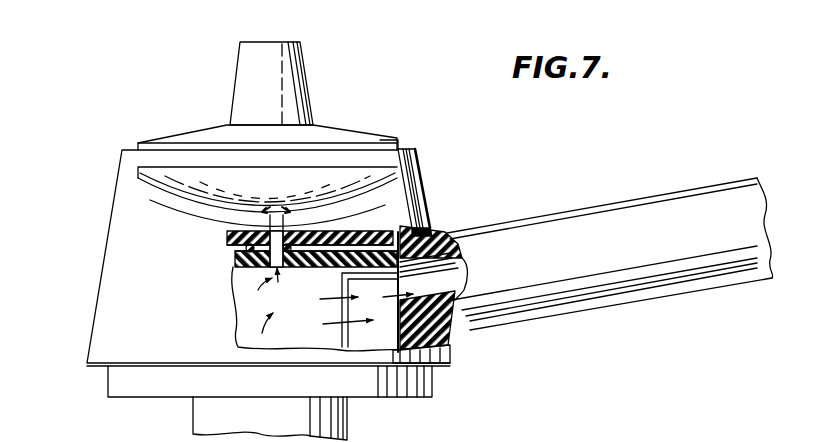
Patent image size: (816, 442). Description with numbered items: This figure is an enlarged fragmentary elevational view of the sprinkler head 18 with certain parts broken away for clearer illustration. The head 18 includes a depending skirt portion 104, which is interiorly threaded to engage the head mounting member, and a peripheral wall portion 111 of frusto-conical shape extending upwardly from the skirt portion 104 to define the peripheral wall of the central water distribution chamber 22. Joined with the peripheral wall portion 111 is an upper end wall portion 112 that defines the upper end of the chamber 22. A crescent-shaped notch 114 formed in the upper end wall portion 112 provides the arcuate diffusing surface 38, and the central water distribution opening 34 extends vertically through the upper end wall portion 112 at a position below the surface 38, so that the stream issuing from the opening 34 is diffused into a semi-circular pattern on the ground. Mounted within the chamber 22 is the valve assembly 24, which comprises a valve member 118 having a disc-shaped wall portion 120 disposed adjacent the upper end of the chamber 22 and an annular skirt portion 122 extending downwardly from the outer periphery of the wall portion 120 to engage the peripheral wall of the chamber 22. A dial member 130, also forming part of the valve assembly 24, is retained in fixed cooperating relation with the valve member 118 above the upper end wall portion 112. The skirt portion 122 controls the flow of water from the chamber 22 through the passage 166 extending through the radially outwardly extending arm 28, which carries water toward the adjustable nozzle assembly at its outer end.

The sprinkler head 18 is at (429, 199).
The central water distribution chamber 22 is at (436, 362).
The valve assembly 24 is at (356, 128).
The radially outwardly extending arm 28 is at (578, 298).
The central water distribution opening 34 is at (298, 221).
The diffusing surface 38 is at (243, 183).
The depending skirt portion 104 is at (370, 385).
The peripheral wall portion 111 is at (120, 295).
The upper end wall portion 112 is at (413, 152).
The crescent-shaped notch 114 is at (398, 178).
The valve member 118 is at (414, 232).
The disc-shaped wall portion 120 is at (243, 268).
The annular skirt portion 122 is at (253, 327).
The dial member 130 is at (232, 135).
The passage 166 is at (470, 279).